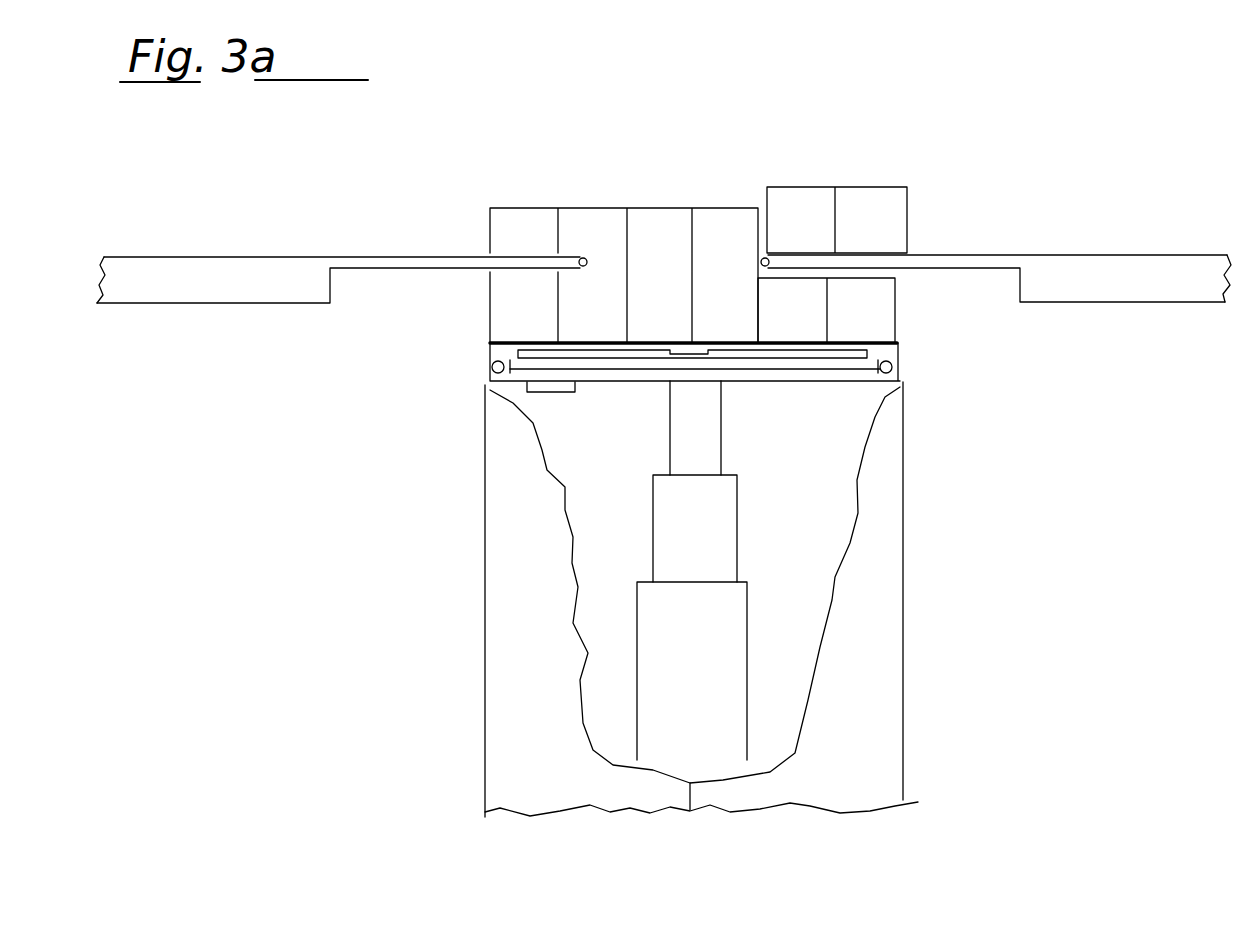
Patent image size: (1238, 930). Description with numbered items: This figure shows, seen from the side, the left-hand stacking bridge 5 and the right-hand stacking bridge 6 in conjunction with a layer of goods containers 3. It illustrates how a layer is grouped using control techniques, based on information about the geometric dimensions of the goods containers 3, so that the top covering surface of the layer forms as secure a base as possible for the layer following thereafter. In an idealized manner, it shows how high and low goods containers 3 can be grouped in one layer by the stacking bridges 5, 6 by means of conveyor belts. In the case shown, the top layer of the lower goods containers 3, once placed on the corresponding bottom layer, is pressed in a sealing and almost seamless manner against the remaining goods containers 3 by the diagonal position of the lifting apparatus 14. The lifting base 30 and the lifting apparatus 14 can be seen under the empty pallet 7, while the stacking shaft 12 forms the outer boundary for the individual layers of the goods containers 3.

The goods containers 3 is at (798, 203).
The left-hand stacking bridge 5 is at (223, 285).
The right-hand stacking bridge 6 is at (1130, 267).
The empty pallet 7 is at (893, 355).
The lifting base 30 is at (783, 370).
The stacking shaft 12 is at (903, 596).
The lifting apparatus 14 is at (722, 630).